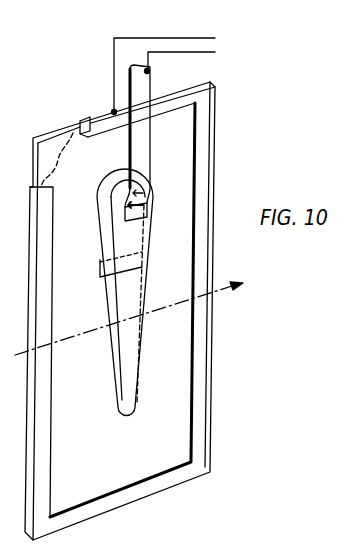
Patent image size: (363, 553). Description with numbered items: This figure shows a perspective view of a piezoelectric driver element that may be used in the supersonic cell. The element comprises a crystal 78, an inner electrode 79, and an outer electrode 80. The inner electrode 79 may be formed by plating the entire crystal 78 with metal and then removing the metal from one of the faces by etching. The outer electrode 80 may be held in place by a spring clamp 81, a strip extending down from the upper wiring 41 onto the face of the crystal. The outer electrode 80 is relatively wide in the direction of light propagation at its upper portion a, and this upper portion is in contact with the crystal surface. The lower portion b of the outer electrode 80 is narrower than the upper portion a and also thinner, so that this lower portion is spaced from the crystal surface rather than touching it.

The wires 41 is at (198, 52).
The crystal 78 is at (60, 125).
The inner electrode 79 is at (33, 212).
The outer electrode 80 is at (150, 236).
The spring clamp 81 is at (143, 88).